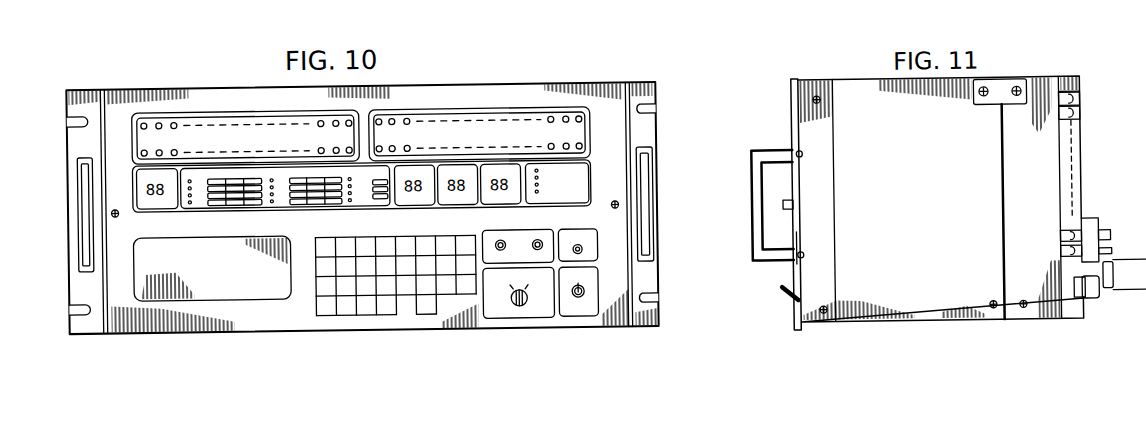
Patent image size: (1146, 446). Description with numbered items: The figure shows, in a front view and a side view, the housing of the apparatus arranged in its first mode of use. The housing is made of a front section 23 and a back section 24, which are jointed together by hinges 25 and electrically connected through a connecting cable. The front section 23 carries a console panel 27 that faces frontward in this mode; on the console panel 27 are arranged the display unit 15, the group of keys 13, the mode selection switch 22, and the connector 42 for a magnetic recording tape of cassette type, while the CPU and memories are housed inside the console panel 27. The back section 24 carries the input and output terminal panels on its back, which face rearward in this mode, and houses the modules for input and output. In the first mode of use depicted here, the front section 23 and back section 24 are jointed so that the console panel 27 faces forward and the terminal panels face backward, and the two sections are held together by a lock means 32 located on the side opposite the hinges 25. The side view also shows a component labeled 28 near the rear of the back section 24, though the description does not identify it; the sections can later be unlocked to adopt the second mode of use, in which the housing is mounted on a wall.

In FIG. 10, the group of keys 13 is at (389, 316).
In FIG. 10, the display unit 15 is at (212, 111).
In FIG. 10, the mode selection switch 22 is at (526, 320).
In FIG. 11, the front section 23 is at (917, 310).
In FIG. 11, the back section 24 is at (1040, 310).
In FIG. 11, the hinges 25 is at (1003, 322).
In FIG. 11, the console panel 27 is at (770, 300).
In FIG. 11, the connector 28 is at (1100, 308).
In FIG. 11, the lock means 32 is at (1002, 90).
In FIG. 10, the connector 42 is at (506, 233).